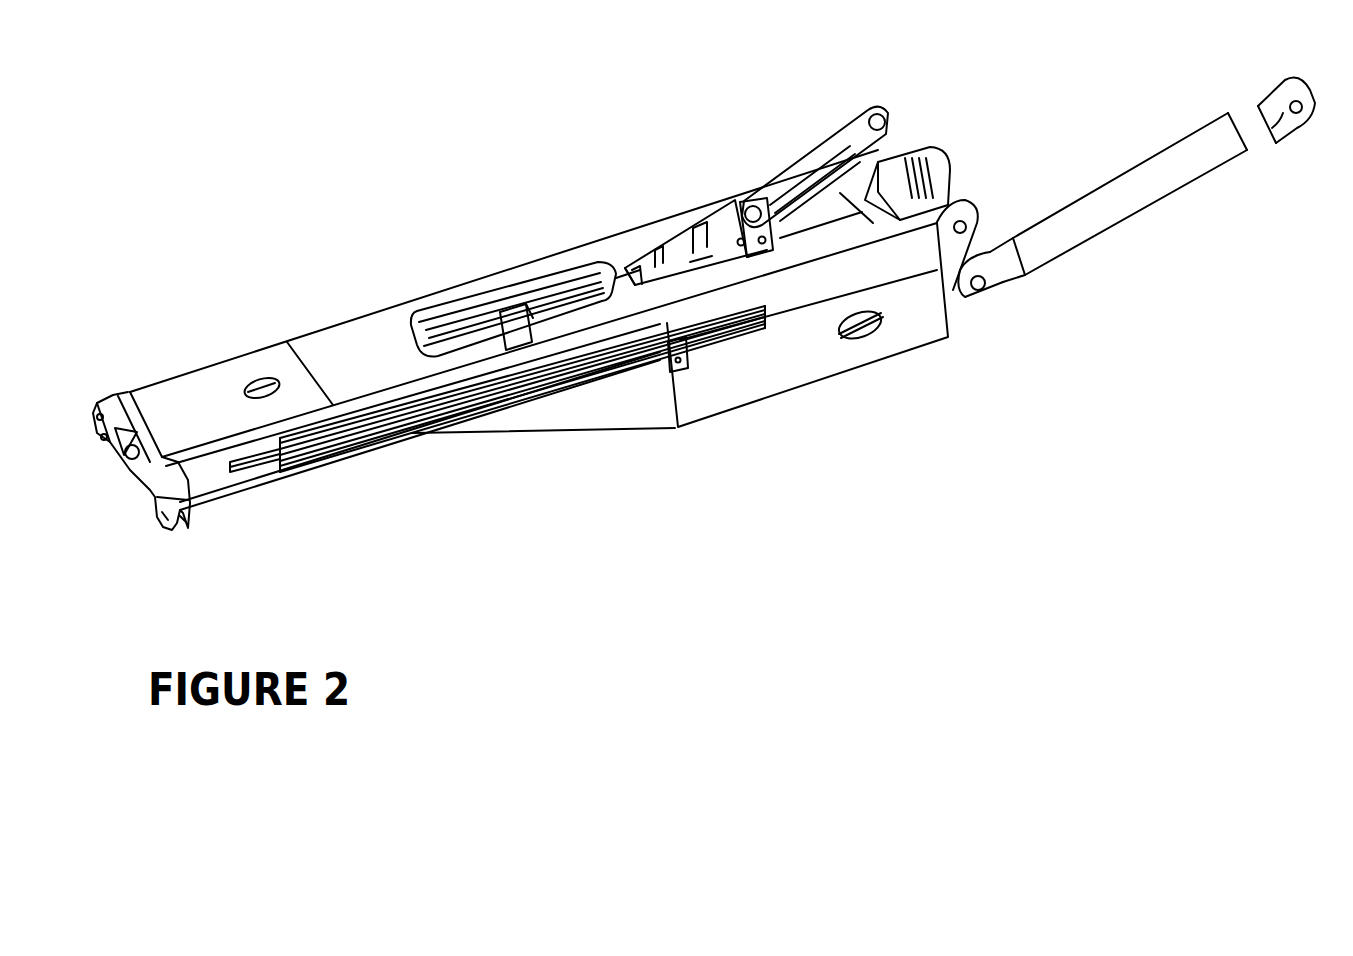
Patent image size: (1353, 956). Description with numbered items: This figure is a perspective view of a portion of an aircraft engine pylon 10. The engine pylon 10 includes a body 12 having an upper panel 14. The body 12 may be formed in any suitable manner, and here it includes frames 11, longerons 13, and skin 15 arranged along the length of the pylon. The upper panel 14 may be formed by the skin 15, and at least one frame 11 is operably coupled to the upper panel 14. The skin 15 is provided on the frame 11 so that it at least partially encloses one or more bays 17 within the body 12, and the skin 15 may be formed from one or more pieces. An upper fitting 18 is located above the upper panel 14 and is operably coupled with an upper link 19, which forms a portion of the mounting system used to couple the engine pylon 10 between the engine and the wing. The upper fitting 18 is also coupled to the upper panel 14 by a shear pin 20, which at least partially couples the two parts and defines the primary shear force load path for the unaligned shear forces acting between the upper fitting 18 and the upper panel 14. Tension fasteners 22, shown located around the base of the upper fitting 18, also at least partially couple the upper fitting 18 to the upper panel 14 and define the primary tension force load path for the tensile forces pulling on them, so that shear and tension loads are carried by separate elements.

The engine pylon 10 is at (386, 222).
The frames 11 is at (433, 330).
The body 12 is at (343, 345).
The longerons 13 is at (425, 331).
The upper panel 14 is at (617, 263).
The skin 15 is at (835, 352).
The bays 17 is at (537, 308).
The upper fitting 18 is at (676, 228).
The upper link 19 is at (821, 127).
The shear pin 20 is at (702, 272).
The tension fasteners 22 is at (640, 250).